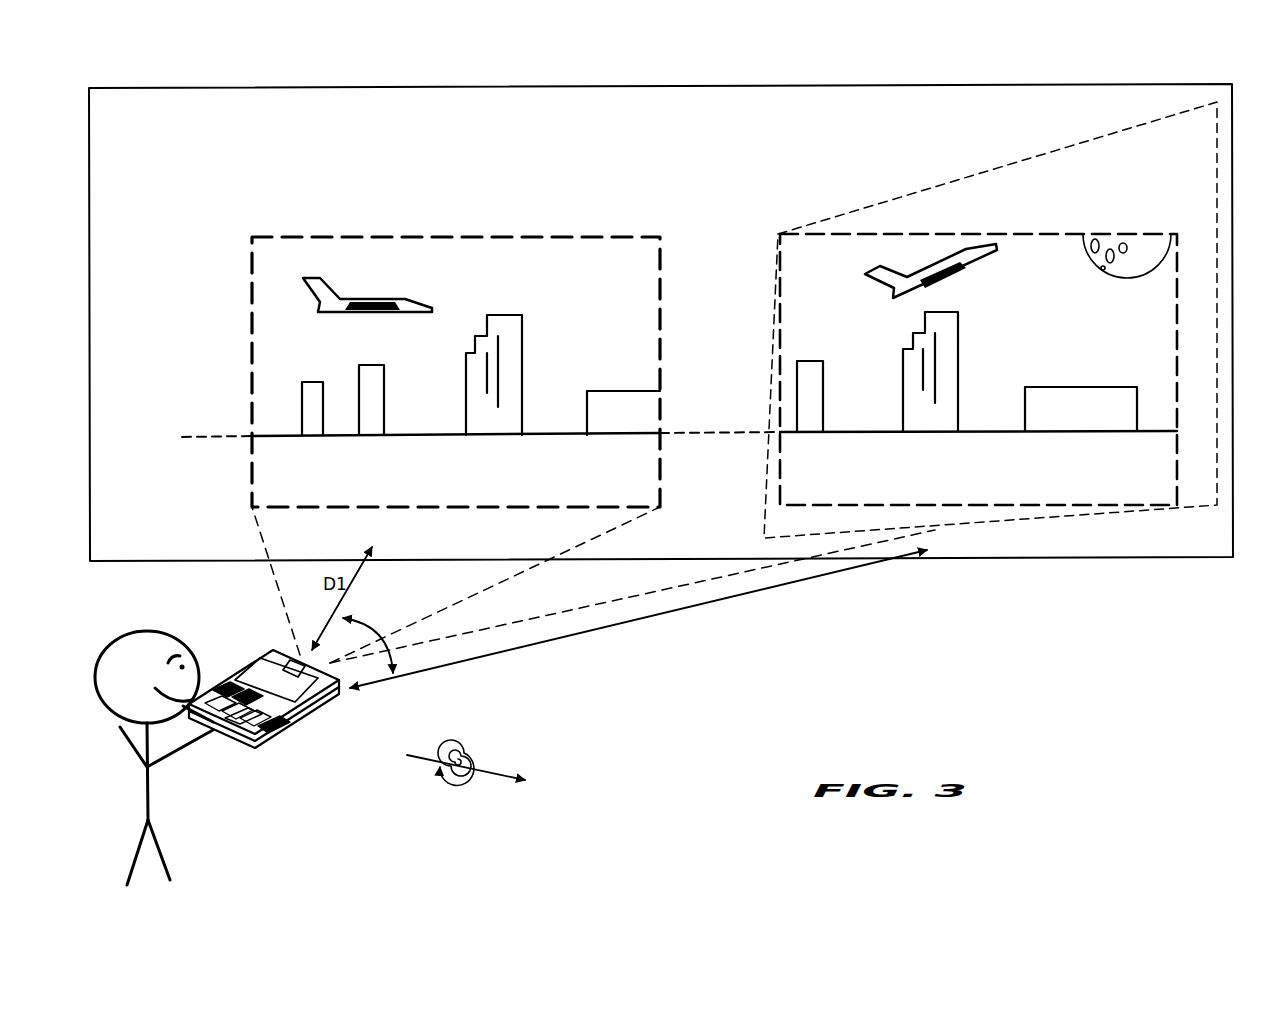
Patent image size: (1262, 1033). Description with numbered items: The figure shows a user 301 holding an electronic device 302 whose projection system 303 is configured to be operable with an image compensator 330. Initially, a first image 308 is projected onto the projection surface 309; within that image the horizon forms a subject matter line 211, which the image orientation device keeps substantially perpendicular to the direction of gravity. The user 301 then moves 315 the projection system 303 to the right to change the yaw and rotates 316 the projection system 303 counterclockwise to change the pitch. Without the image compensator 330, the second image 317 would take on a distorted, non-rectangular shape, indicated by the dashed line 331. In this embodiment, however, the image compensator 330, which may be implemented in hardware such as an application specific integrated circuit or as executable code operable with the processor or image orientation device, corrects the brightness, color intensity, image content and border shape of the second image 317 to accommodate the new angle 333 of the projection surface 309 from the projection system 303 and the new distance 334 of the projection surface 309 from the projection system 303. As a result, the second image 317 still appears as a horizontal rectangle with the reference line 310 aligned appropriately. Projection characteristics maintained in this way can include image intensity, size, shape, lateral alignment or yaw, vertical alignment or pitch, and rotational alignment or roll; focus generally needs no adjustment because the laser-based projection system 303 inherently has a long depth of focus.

The user 301 is at (150, 783).
The electronic device 302 is at (276, 699).
The projection system 303 is at (268, 652).
The image compensator 330 is at (277, 720).
The first image 308 is at (252, 315).
The reference line 310 is at (215, 433).
The subject matter line 211 is at (405, 437).
The dashed line 331 is at (917, 195).
The second image 317 is at (773, 334).
The projection surface 309 is at (1022, 559).
The angle 333 is at (343, 598).
The distance D2 direction 334 is at (640, 617).
The movement 315 is at (487, 773).
The rotation 316 is at (453, 748).